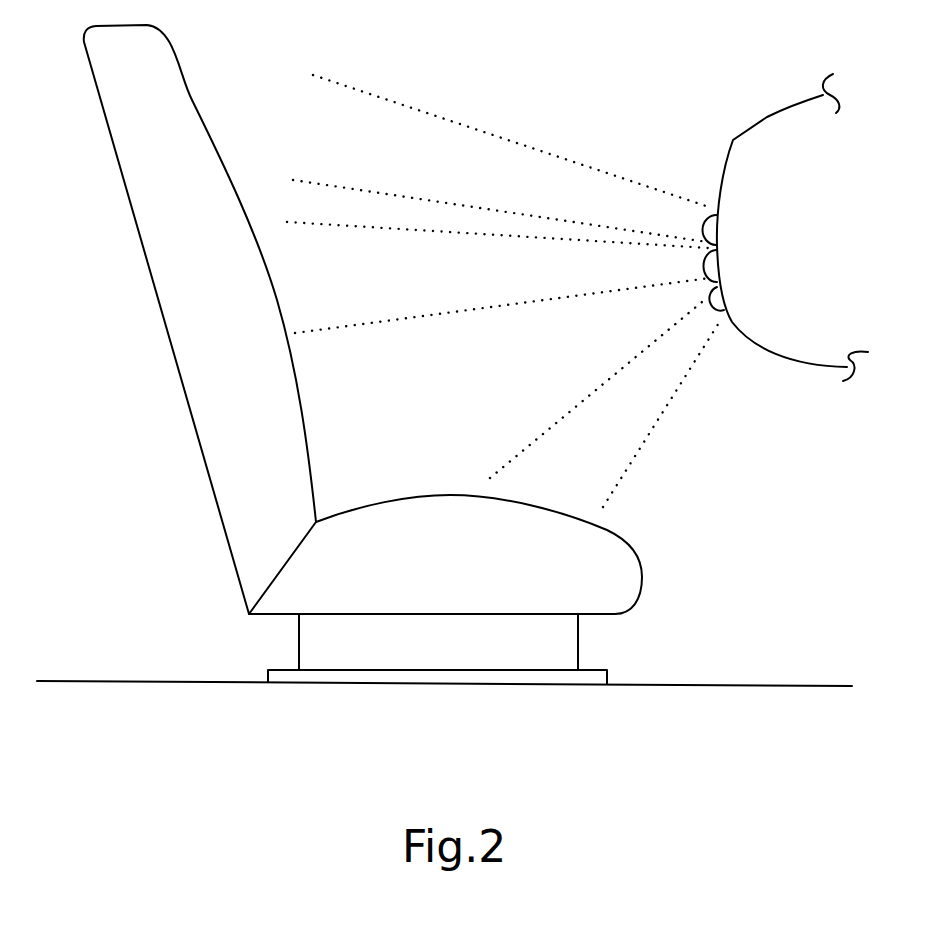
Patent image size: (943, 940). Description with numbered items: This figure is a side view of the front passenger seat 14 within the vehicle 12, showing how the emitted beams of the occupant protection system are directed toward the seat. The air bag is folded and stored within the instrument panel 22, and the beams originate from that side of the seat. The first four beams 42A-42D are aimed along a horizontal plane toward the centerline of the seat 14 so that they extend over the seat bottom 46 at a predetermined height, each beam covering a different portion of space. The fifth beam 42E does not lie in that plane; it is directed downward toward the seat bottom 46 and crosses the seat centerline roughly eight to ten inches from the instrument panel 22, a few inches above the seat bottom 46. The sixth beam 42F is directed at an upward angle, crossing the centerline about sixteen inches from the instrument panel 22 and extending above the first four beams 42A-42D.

The vehicle 12 is at (155, 692).
The front passenger seat 14 is at (190, 422).
The instrument panel 22 is at (768, 118).
The first four beams 42A-42D is at (382, 303).
The fifth beam 42E is at (642, 418).
The sixth beam 42F is at (497, 150).
The seat bottom 46 is at (627, 555).